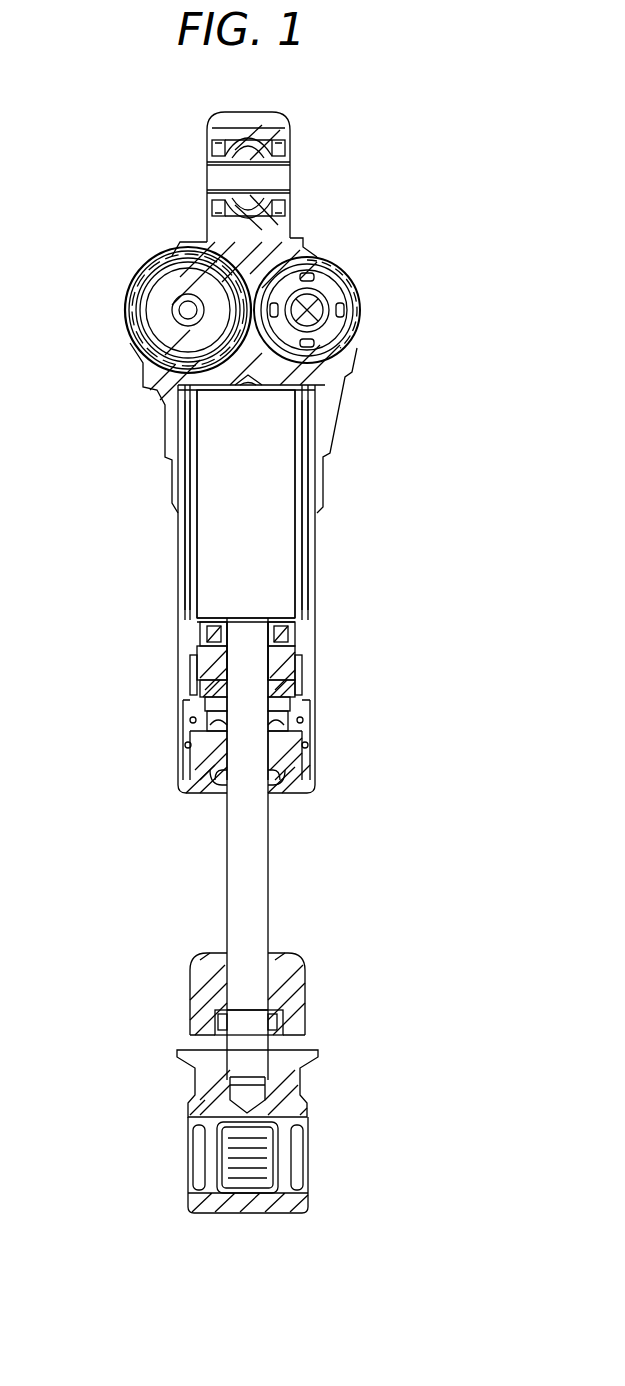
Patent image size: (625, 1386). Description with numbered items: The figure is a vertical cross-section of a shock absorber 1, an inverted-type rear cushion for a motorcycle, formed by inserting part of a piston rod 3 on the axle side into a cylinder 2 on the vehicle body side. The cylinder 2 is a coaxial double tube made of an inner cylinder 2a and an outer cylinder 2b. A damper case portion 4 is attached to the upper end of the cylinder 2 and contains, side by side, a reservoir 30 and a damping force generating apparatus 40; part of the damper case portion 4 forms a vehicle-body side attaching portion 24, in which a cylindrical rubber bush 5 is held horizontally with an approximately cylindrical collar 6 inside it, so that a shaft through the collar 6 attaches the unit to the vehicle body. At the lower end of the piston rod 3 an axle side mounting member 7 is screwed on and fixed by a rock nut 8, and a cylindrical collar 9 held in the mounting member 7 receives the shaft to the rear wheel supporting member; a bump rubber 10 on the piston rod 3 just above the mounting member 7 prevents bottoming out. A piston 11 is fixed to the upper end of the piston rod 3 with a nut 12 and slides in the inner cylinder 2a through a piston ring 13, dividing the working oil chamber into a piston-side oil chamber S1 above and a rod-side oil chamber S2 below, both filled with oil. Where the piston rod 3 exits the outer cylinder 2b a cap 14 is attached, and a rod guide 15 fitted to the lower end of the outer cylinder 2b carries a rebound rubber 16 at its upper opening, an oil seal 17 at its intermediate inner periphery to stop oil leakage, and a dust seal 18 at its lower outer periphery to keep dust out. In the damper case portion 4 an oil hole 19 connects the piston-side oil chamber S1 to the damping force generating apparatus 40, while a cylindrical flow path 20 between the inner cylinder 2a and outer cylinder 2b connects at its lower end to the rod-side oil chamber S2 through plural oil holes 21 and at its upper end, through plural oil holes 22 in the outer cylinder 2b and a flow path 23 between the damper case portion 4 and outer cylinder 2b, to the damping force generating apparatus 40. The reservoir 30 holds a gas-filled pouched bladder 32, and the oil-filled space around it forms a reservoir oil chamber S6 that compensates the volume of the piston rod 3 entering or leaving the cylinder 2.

The shock absorber 1 is at (384, 178).
The cylinder 2 is at (372, 540).
The inner cylinder 2a is at (310, 549).
The outer cylinder 2b is at (306, 572).
The piston rod 3 is at (227, 882).
The damper case portion 4 is at (306, 262).
The rubber bush 5 is at (265, 148).
The collar 6 is at (212, 201).
The axle side mounting member 7 is at (287, 1080).
The rock nut 8 is at (215, 1023).
The collar 9 is at (222, 1160).
The bump rubber 10 is at (296, 990).
The piston 11 is at (190, 661).
The nut 12 is at (268, 630).
The piston ring 13 is at (296, 638).
The cap 14 is at (198, 790).
The rod guide 15 is at (298, 743).
The rebound rubber 16 is at (300, 689).
The oil seal 17 is at (300, 722).
The dust seal 18 is at (276, 790).
The oil hole 19 is at (255, 382).
The flow path 20 is at (300, 604).
The oil holes 21 is at (190, 672).
The oil holes 22 is at (325, 420).
The flow path 23 is at (330, 403).
The vehicle-body side attaching portion 24 is at (288, 199).
The reservoir 30 is at (172, 258).
The bladder 32 is at (142, 273).
The damping force generating apparatus 40 is at (345, 270).
The piston-side oil chamber S1 is at (215, 549).
The rod-side oil chamber S2 is at (205, 700).
The reservoir oil chamber S6 is at (133, 298).